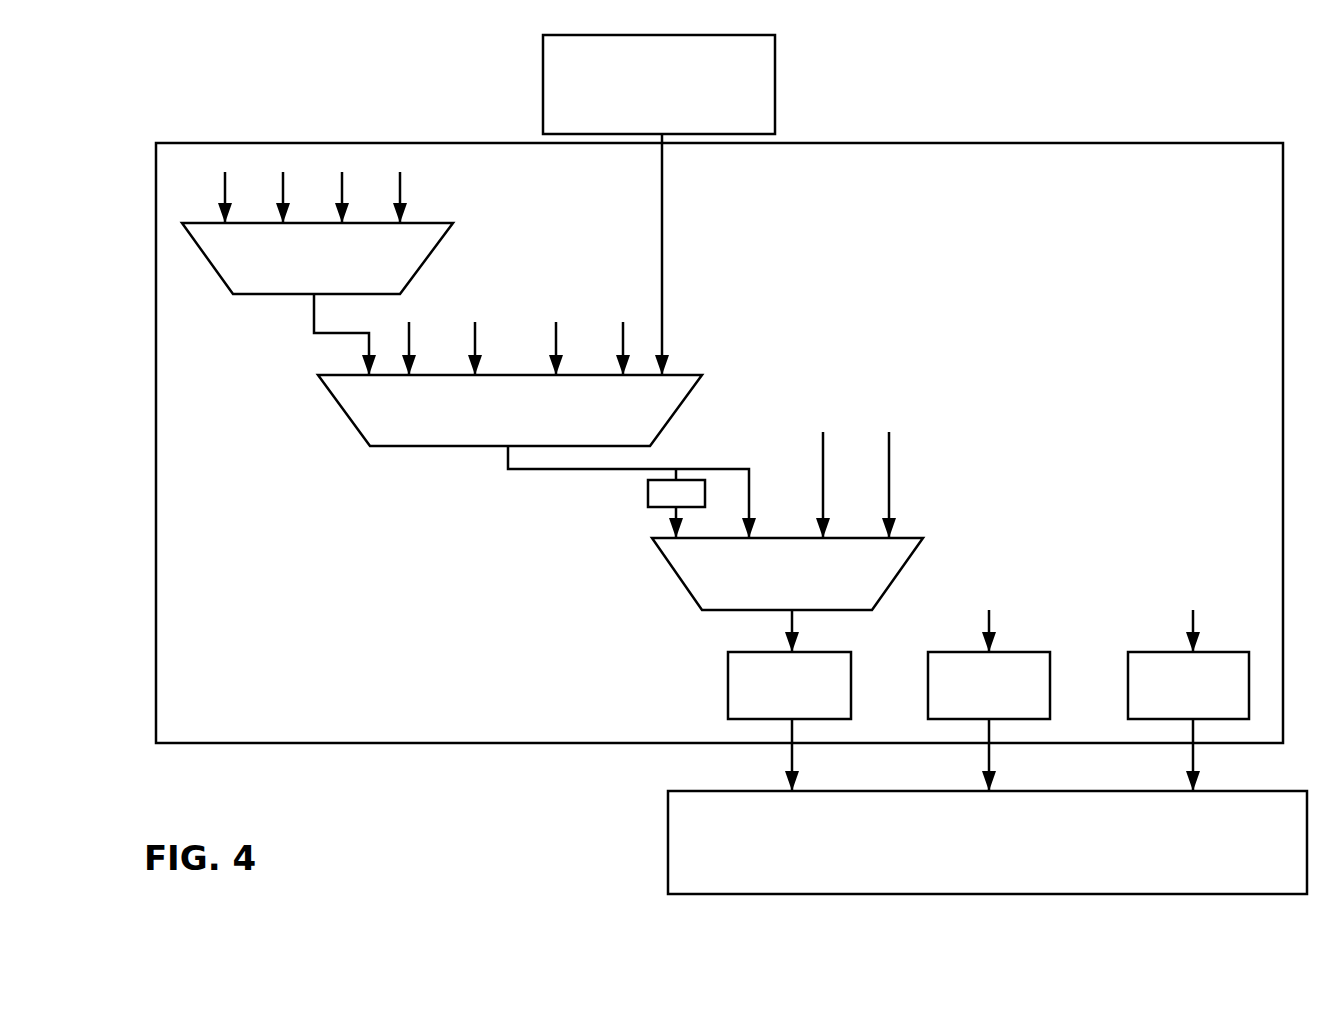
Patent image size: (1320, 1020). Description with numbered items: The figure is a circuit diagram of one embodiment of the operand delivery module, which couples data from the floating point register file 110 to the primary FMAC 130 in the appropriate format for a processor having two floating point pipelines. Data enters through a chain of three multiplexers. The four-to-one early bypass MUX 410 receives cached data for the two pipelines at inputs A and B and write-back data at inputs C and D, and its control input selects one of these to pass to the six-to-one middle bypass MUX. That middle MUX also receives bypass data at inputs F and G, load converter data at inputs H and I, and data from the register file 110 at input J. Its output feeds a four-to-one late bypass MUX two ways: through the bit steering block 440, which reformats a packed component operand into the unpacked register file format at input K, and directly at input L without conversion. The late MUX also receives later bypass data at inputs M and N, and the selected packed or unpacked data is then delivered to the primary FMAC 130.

The floating point register file 110 is at (659, 205).
The 4:1 early bypass MUX 410 is at (317, 262).
The bit steering block 440 is at (667, 503).
The primary FMAC 130 is at (987, 842).